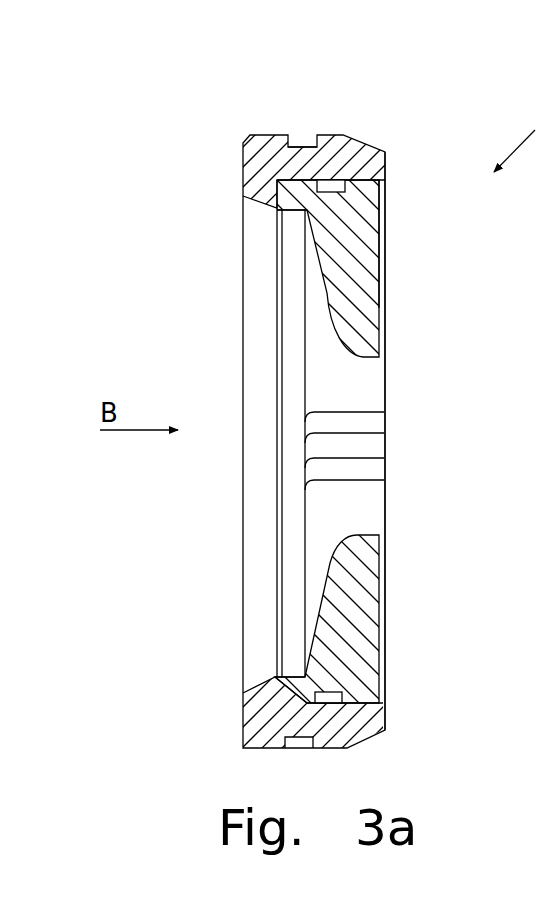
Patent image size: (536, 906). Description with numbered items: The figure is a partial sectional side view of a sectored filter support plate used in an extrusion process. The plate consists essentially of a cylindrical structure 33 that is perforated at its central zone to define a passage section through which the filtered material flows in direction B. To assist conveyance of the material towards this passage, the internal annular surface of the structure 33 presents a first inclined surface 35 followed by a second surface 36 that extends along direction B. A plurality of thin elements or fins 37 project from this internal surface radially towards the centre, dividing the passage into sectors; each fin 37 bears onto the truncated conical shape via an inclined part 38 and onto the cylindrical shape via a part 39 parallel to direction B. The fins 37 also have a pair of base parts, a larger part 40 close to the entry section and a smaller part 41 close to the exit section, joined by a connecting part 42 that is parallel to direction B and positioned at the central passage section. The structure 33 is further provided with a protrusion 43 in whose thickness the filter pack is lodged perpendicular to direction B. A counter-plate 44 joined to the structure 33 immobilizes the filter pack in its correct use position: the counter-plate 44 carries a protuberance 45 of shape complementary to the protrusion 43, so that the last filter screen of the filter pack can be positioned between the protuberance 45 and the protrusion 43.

The cylindrical structure 33 is at (336, 255).
The first inclined surface 35 is at (305, 213).
The second surface 36 is at (362, 323).
The fins 37 is at (318, 375).
The inclined part 38 is at (323, 298).
The part parallel to direction B 39 is at (383, 360).
The larger base part 40 is at (300, 266).
The smaller base part 41 is at (383, 400).
The connecting part 42 is at (322, 412).
The protrusion 43 is at (283, 705).
The counter-plate 44 is at (333, 158).
The protuberance 45 is at (258, 168).